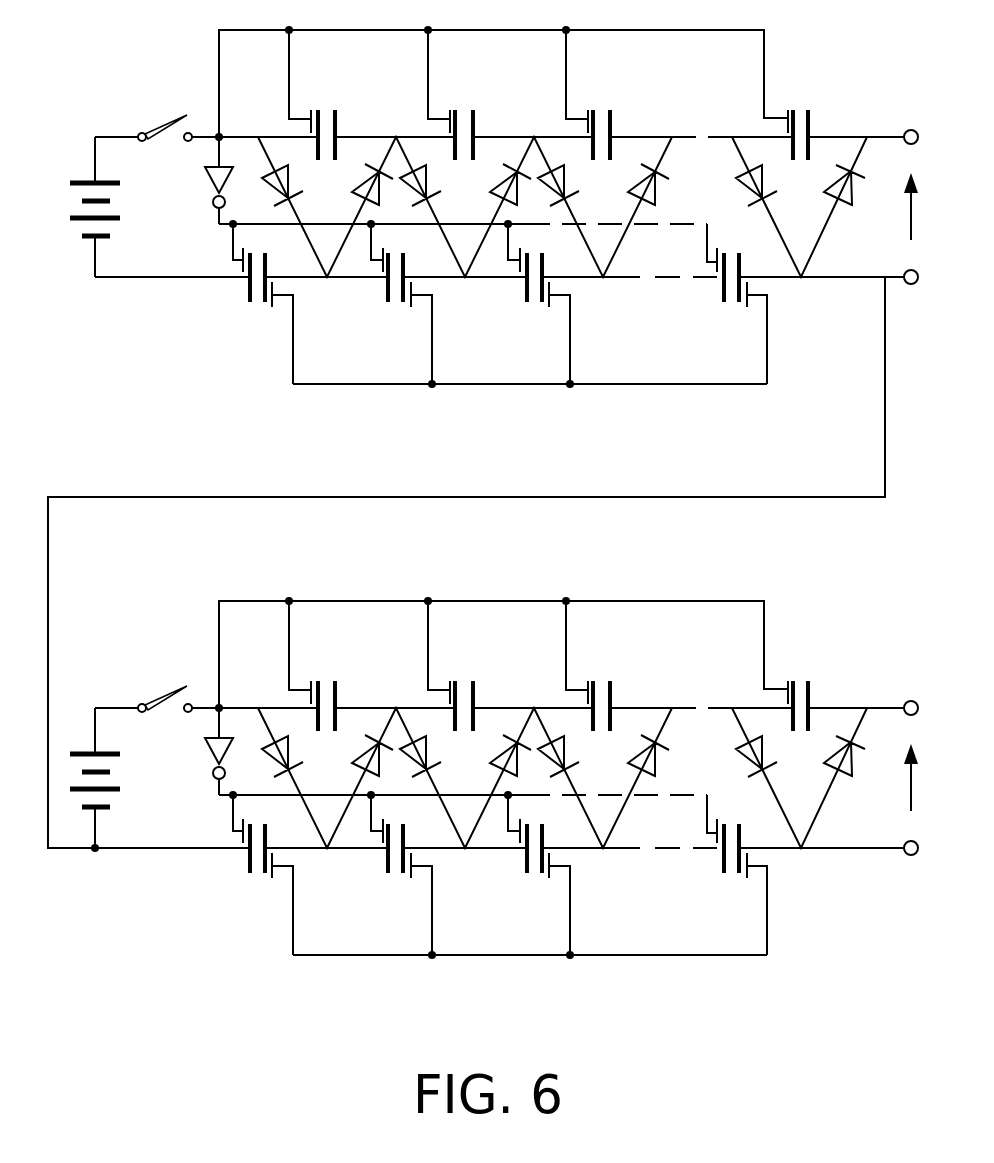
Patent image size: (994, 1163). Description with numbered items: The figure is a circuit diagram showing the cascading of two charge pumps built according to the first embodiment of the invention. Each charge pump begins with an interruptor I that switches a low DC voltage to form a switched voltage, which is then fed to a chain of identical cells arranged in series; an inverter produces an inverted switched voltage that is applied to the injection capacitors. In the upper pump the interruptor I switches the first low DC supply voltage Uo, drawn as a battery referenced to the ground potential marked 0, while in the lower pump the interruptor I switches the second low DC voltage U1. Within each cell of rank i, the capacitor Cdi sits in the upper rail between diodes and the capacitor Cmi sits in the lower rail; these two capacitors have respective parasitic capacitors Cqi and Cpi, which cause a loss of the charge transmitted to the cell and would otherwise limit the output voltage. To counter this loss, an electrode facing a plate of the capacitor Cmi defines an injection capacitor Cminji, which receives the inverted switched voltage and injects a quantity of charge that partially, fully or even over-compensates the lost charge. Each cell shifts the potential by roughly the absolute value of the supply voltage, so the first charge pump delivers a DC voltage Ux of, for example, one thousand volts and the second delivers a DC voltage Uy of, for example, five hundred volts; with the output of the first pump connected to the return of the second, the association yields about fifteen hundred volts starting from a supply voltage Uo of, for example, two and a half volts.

The interruptor I is at (158, 120).
The parasitic capacitor Cqi is at (781, 111).
The capacitor Cdi is at (811, 114).
The injection capacitor Cminji is at (713, 266).
The capacitor Cmi is at (733, 304).
The parasitic capacitor Cpi is at (758, 300).
The DC supply voltage Uo is at (89, 128).
The second low DC voltage U1 is at (91, 699).
The ground reference 0 is at (101, 569).
The DC voltage Ux is at (895, 206).
The DC voltage Uy is at (894, 777).